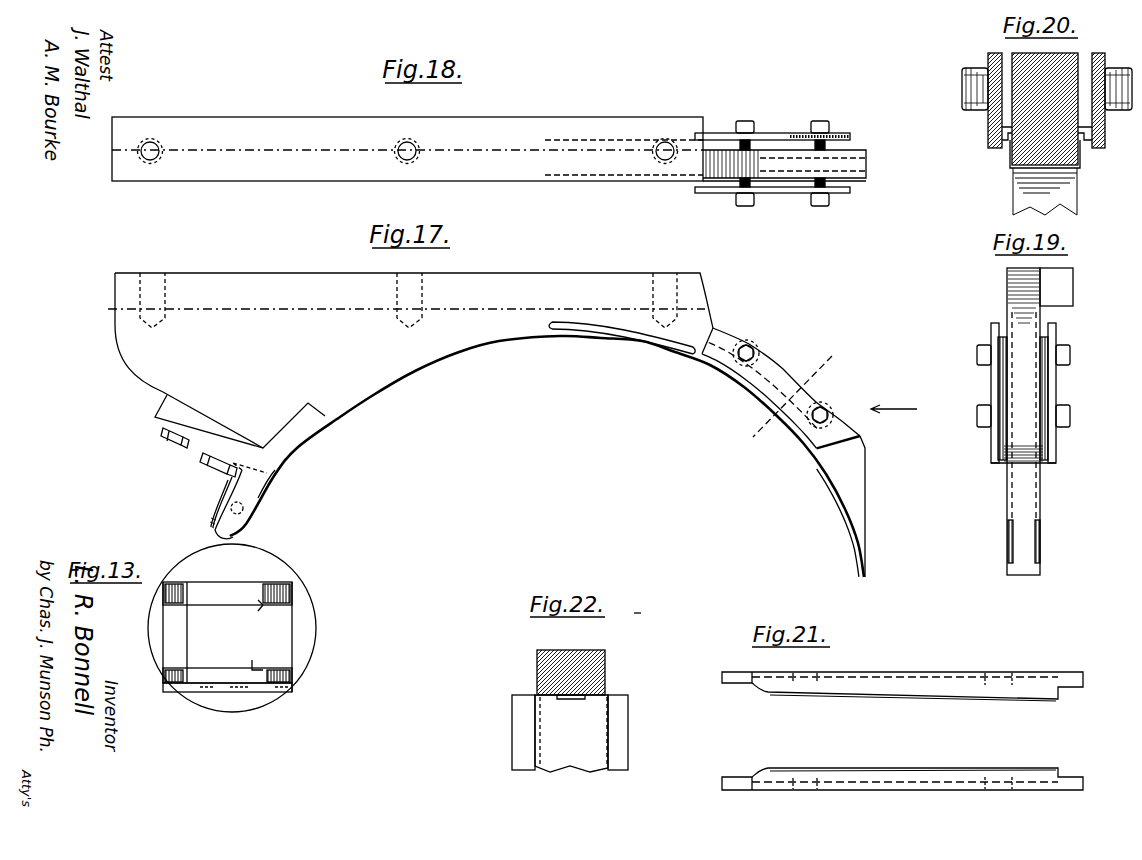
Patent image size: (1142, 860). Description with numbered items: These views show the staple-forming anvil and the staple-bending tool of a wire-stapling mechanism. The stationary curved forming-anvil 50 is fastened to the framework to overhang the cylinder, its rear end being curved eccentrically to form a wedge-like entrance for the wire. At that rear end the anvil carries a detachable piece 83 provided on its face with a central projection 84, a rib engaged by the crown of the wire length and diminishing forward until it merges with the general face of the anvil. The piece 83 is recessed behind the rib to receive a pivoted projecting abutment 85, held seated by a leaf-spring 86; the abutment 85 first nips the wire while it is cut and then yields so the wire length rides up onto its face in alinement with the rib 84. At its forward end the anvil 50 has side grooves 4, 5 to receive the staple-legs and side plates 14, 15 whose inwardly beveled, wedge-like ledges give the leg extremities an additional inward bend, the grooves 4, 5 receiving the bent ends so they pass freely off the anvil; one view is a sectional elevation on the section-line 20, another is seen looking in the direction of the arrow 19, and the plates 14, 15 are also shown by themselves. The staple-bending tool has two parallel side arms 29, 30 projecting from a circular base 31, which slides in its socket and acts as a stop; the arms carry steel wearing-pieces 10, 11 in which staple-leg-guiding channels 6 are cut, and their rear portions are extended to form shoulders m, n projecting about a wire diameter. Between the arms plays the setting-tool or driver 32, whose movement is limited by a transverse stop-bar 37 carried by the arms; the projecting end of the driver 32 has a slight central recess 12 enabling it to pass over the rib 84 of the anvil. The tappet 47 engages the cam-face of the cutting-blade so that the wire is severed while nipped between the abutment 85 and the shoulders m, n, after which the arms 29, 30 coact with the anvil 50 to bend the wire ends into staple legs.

In FIG. 18, the forming-anvil 50 is at (407, 149).
In FIG. 20, the forming-anvil 50 is at (1045, 134).
In FIG. 19, the forming-anvil 50 is at (1038, 421).
In FIG. 17, the forming-anvil 50 is at (486, 425).
In FIG. 18, the side groove 4 is at (853, 183).
In FIG. 20, the side groove 4 is at (1006, 126).
In FIG. 19, the side groove 4 is at (1008, 530).
In FIG. 17, the side groove 4 is at (707, 449).
In FIG. 18, the side groove 5 is at (850, 158).
In FIG. 20, the side groove 5 is at (1085, 126).
In FIG. 19, the side groove 5 is at (1040, 530).
In FIG. 18, the side plate 14 is at (791, 194).
In FIG. 20, the side plate 14 is at (988, 130).
In FIG. 19, the side plate 14 is at (991, 388).
In FIG. 17, the side plate 14 is at (781, 388).
In FIG. 21, the side plate 14 is at (940, 778).
In FIG. 18, the side plate 15 is at (786, 133).
In FIG. 20, the side plate 15 is at (1105, 130).
In FIG. 19, the side plate 15 is at (1056, 388).
In FIG. 21, the side plate 15 is at (940, 683).
In FIG. 17, the arrow indicating direction of view 19 is at (894, 417).
In FIG. 17, the section-line 20 is at (803, 396).
In FIG. 17, the detachable piece 83 is at (282, 424).
In FIG. 22, the detachable piece 83 is at (606, 670).
In FIG. 17, the central projection 84 is at (276, 471).
In FIG. 22, the central projection 84 is at (562, 695).
In FIG. 17, the projecting abutment 85 is at (262, 491).
In FIG. 17, the leaf-spring 86 is at (227, 492).
In FIG. 13, the circular base 31 is at (232, 628).
In FIG. 13, the steel wearing-piece 10 is at (277, 586).
In FIG. 13, the side arm 29 is at (227, 593).
In FIG. 22, the side arm 29 is at (618, 732).
In FIG. 13, the shoulder m is at (260, 605).
In FIG. 13, the staple-leg-guiding channel 6 is at (263, 605).
In FIG. 13, the transverse stop-bar 37 is at (167, 643).
In FIG. 13, the shoulder n is at (255, 654).
In FIG. 13, the steel wearing-piece 11 is at (278, 674).
In FIG. 13, the side arm 30 is at (243, 672).
In FIG. 22, the side arm 30 is at (523, 732).
In FIG. 13, the tappet 47 is at (240, 692).
In FIG. 22, the central recess 12 is at (577, 700).
In FIG. 22, the setting-tool or driver 32 is at (571, 733).